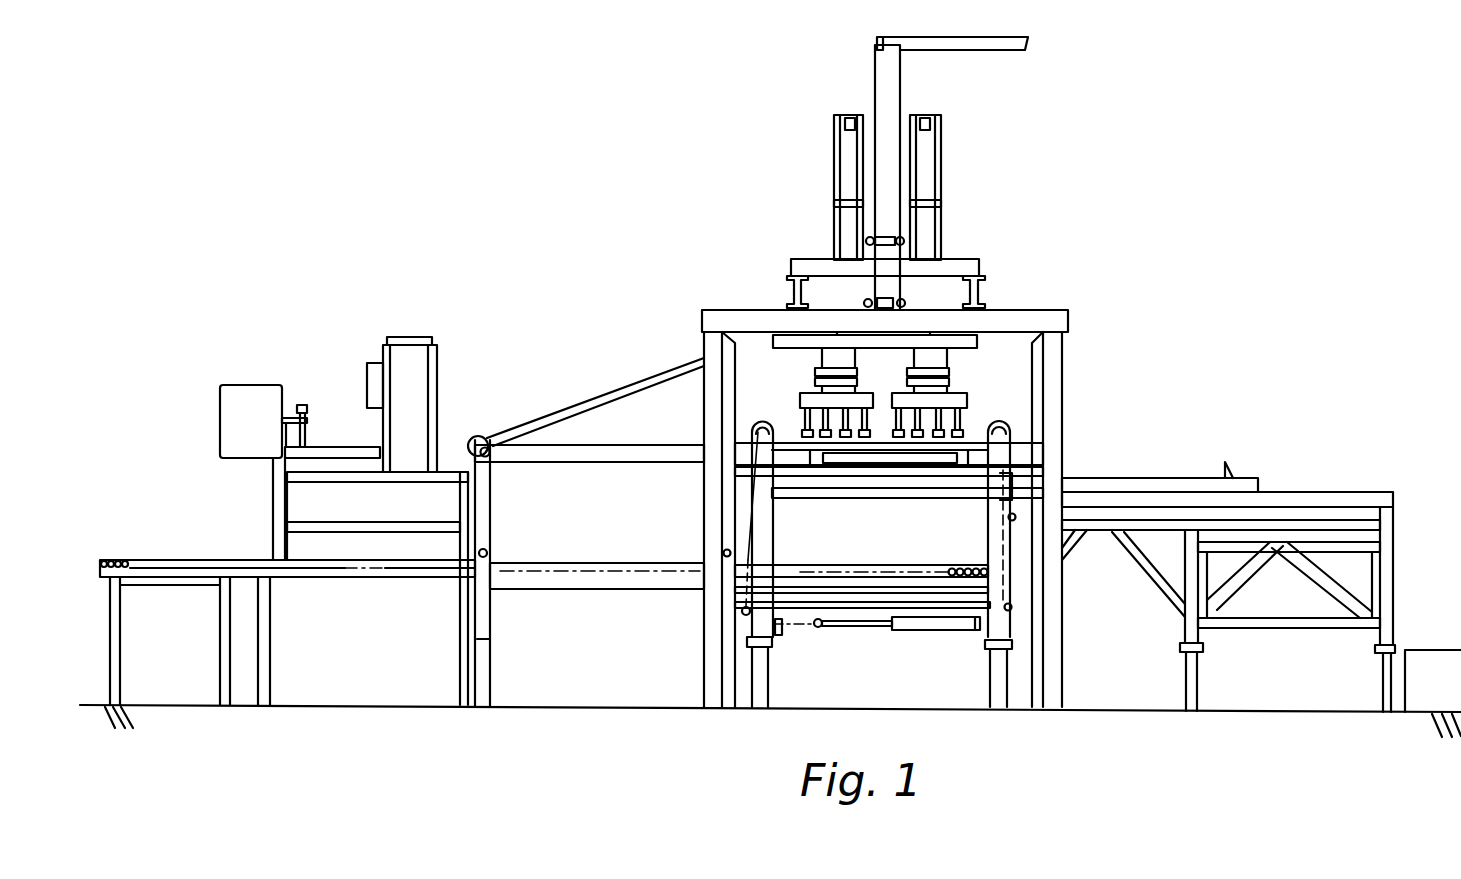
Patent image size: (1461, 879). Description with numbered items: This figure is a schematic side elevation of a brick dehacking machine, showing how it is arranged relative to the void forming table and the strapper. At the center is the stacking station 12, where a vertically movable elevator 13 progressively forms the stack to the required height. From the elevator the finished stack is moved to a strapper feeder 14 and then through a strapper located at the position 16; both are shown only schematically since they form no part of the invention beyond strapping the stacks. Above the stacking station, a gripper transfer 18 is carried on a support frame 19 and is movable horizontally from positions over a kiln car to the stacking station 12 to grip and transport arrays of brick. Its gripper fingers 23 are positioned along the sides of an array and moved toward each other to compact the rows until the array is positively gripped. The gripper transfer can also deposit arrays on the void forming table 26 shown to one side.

The stacking station 12 is at (818, 636).
The elevator 13 is at (845, 568).
The strapper feeder 14 is at (549, 561).
The strapper 16 is at (420, 562).
The gripper transfer 18 is at (968, 380).
The support frame 19 is at (1003, 308).
The gripper fingers 23 is at (803, 423).
The void forming table 26 is at (1105, 477).